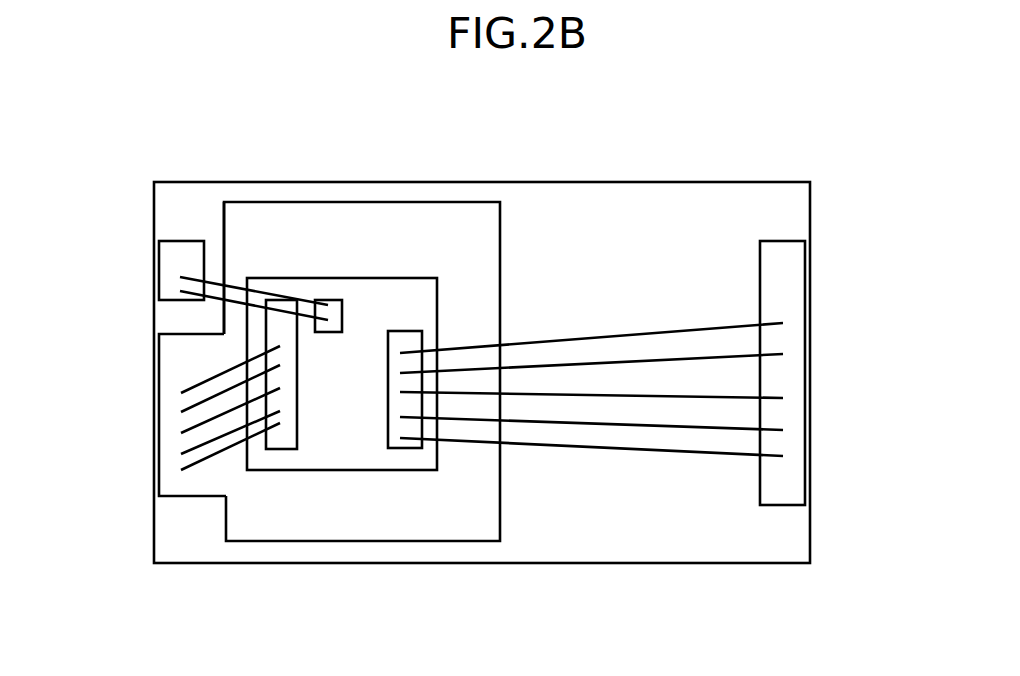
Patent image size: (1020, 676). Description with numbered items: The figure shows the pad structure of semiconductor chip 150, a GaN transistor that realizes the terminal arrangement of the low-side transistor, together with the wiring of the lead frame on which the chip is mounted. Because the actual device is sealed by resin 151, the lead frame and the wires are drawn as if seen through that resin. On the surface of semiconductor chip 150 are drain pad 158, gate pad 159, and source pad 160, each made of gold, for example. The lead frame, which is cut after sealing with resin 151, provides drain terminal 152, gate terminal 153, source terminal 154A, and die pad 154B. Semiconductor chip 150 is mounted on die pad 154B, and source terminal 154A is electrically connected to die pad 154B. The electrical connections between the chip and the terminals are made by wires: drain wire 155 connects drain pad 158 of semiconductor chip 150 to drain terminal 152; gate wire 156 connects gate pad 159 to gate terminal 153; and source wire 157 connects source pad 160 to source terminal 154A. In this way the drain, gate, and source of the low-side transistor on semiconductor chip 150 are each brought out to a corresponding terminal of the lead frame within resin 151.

The semiconductor chip 150 is at (383, 297).
The resin 151 is at (643, 227).
The drain terminal 152 is at (785, 277).
The gate terminal 153 is at (177, 263).
The source terminal 154A is at (177, 483).
The die pad 154B is at (287, 238).
The drain wire 155 is at (643, 450).
The gate wire 156 is at (236, 283).
The source wire 157 is at (207, 458).
The drain pad 158 is at (395, 442).
The gate pad 159 is at (335, 323).
The source pad 160 is at (281, 440).